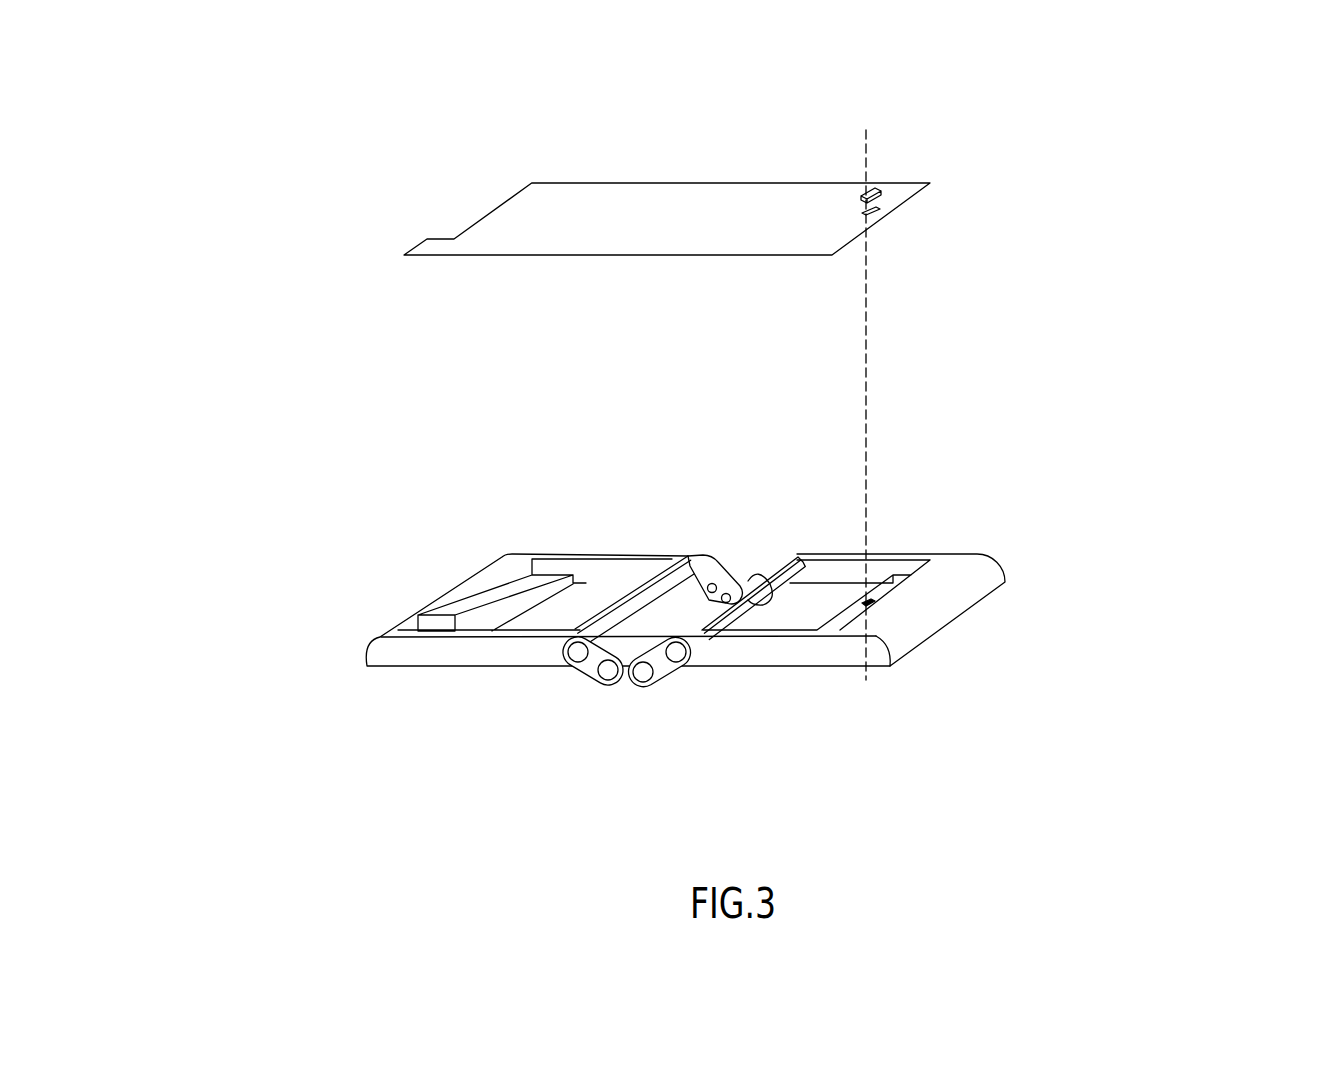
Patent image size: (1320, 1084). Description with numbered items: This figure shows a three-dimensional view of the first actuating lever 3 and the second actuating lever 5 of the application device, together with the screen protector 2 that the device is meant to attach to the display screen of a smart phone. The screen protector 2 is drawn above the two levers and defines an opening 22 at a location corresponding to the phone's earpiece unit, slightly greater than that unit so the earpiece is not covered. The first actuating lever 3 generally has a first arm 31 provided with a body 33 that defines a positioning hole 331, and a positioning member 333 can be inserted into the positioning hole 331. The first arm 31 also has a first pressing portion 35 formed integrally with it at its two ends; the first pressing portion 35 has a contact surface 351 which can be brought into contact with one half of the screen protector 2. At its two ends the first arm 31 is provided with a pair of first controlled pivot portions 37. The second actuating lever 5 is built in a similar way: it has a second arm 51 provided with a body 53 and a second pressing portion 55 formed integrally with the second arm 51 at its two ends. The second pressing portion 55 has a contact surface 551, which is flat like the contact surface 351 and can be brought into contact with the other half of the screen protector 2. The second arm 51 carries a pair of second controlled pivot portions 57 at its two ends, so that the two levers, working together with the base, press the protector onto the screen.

The screen protector 2 is at (492, 212).
The opening 22 is at (880, 210).
The positioning member 333 is at (877, 186).
The first actuating lever 3 is at (929, 537).
The first arm 31 is at (945, 552).
The body 33 is at (840, 634).
The positioning hole 331 is at (873, 602).
The first pressing portion 35 is at (752, 710).
The contact surface 351 is at (750, 575).
The first controlled pivot portions 37 is at (672, 670).
The second actuating lever 5 is at (529, 576).
The second arm 51 is at (486, 634).
The body 53 is at (533, 607).
The second pressing portion 55 is at (639, 618).
The second controlled pivot portions 57 is at (596, 645).
The contact surface 551 is at (618, 683).